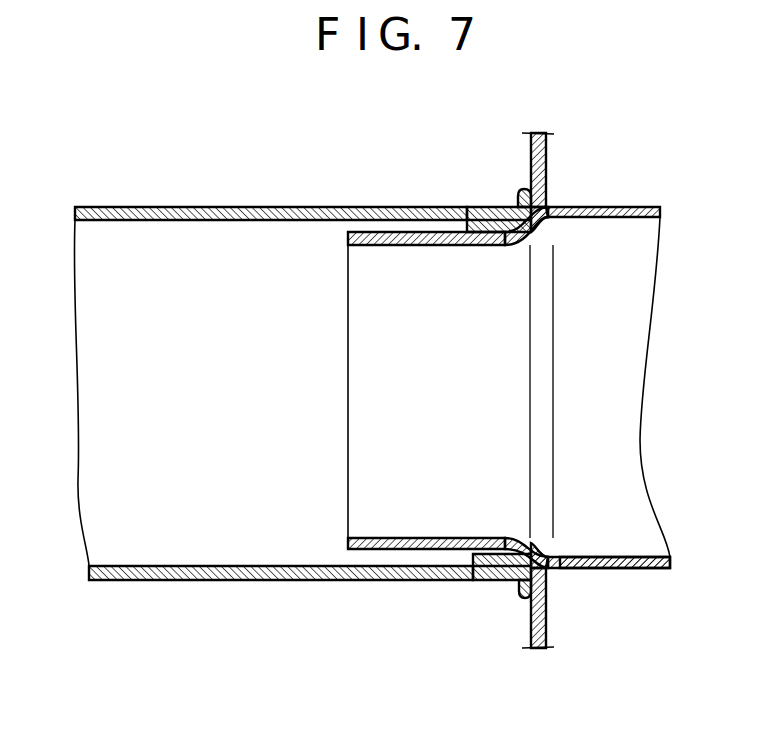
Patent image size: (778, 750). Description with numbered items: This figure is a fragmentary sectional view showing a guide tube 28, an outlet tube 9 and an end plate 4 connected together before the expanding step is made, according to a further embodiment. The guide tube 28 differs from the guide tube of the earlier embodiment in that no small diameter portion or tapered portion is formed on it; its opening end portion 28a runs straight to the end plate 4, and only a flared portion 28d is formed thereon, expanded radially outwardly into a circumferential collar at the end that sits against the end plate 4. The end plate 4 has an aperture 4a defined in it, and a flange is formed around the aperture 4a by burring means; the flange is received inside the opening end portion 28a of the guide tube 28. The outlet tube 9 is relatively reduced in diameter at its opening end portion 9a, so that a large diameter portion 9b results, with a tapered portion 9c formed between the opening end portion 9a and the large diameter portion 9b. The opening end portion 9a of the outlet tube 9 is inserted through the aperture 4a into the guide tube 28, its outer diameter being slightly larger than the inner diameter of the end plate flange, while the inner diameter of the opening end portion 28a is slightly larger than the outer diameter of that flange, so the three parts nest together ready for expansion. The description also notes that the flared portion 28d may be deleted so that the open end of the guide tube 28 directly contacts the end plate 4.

The guide tube 28 is at (258, 208).
The opening end portion 28a is at (480, 204).
The flared portion 28d is at (521, 192).
The end plate 4 is at (549, 166).
The aperture 4a is at (549, 210).
The outlet tube 9 is at (612, 207).
The opening end portion 9a is at (366, 552).
The large diameter portion 9b is at (624, 570).
The tapered portion 9c is at (564, 556).